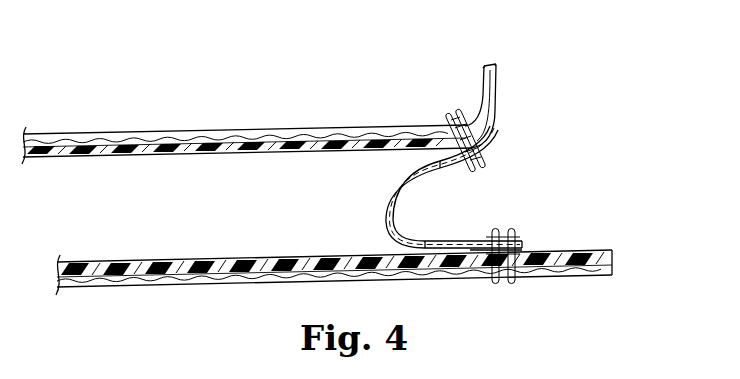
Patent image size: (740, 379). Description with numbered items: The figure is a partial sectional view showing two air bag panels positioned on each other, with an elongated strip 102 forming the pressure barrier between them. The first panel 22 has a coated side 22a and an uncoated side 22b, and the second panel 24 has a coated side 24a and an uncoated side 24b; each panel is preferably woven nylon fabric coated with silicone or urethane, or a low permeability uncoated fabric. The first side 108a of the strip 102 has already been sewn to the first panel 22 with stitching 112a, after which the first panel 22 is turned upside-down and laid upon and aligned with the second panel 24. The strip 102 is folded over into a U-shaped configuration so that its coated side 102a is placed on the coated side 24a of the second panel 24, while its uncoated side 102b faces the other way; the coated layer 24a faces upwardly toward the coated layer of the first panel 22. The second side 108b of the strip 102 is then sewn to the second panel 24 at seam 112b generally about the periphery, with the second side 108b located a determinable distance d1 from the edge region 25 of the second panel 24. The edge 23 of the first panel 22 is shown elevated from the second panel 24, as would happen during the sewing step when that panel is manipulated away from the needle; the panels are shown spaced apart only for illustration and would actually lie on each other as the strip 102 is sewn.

The first panel 22 is at (58, 134).
The coated side of panel 22 22a is at (152, 156).
The uncoated side of panel 22 22b is at (97, 139).
The edge of panel 22 23 is at (487, 64).
The second panel 24 is at (362, 257).
The coated side of panel 24 24a is at (101, 262).
The uncoated side of panel 24 24b is at (115, 287).
The end of second strip 25 is at (613, 257).
The strip 102 is at (386, 207).
The coated side of strip 102 102a is at (394, 181).
The uncoated side of strip 102 102b is at (397, 197).
The first side of strip 102 108a is at (490, 135).
The second side of strip 102 108b is at (521, 233).
The first stitching 112a is at (470, 112).
The seam 112b is at (500, 230).
The distance d1 is at (605, 230).